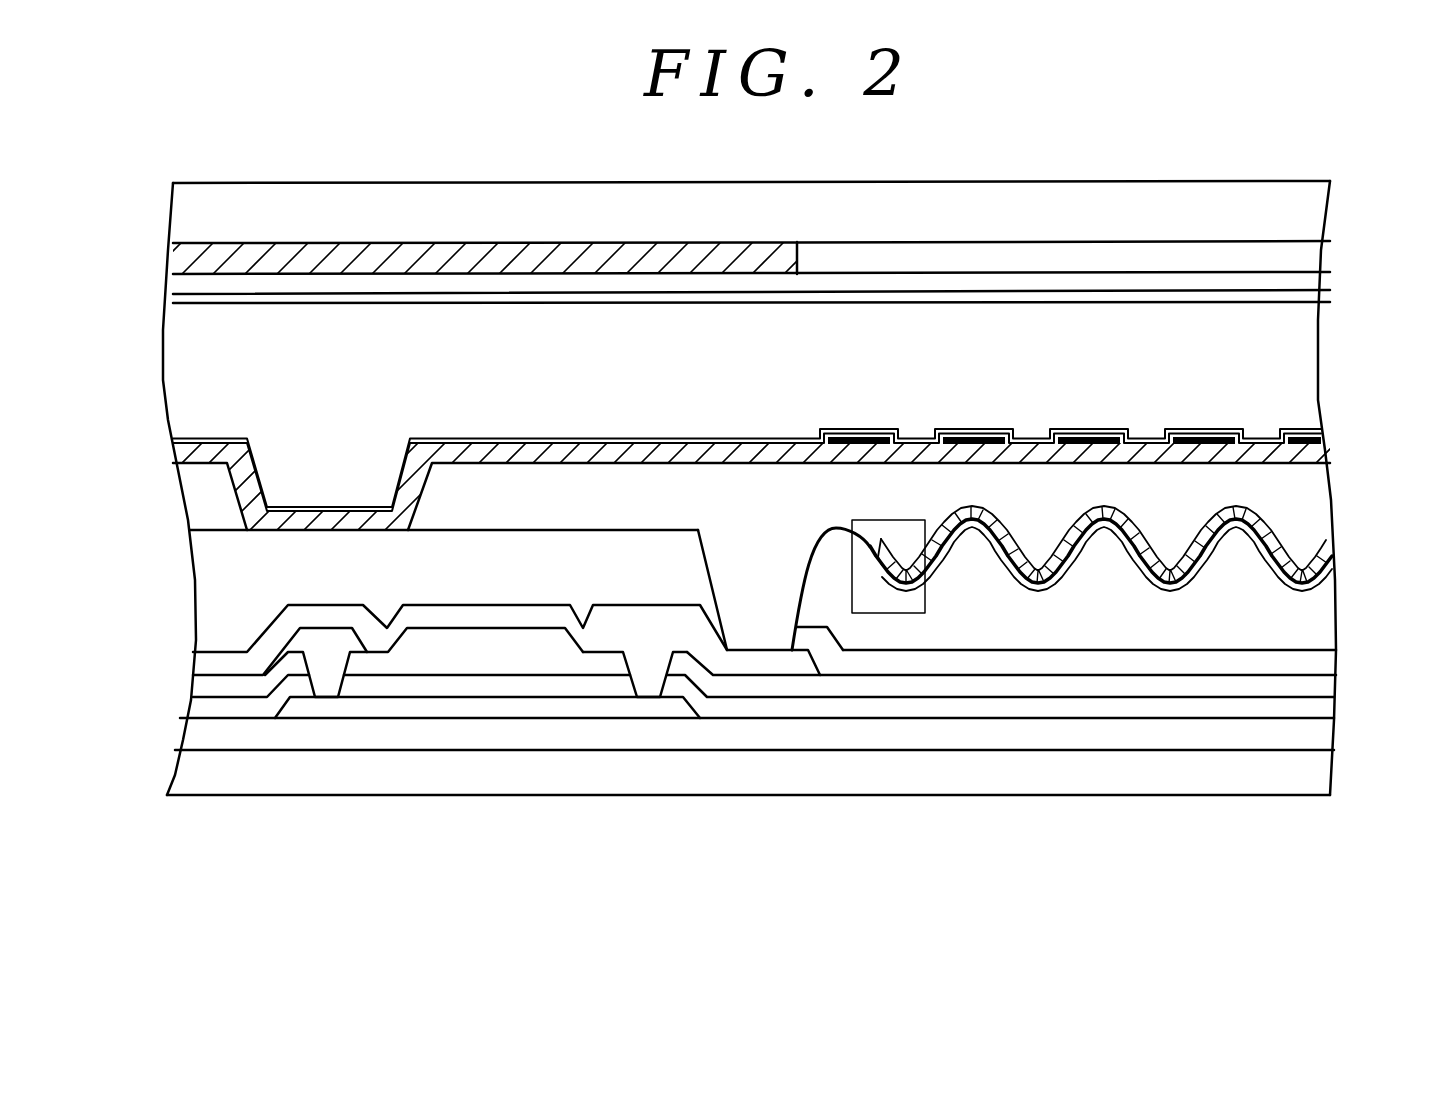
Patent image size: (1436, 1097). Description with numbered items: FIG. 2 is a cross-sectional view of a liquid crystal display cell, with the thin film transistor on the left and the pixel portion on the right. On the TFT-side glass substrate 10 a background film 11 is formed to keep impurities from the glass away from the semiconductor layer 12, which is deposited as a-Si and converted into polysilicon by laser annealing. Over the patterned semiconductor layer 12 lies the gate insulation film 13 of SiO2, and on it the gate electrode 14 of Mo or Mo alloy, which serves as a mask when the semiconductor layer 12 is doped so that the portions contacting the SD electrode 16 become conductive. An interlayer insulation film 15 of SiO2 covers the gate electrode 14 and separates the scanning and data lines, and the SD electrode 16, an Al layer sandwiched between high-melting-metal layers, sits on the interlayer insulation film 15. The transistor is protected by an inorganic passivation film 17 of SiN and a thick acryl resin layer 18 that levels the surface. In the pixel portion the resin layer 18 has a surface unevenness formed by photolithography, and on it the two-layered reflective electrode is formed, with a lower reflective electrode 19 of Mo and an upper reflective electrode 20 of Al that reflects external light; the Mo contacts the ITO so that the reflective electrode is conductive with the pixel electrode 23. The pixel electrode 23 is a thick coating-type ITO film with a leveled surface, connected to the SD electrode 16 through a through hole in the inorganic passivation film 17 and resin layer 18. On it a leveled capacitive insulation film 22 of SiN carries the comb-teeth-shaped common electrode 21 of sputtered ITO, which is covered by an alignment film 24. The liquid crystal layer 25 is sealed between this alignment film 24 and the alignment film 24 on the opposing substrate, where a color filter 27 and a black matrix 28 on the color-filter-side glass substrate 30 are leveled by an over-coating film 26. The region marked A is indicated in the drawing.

The TFT-side glass substrate 10 is at (195, 778).
The background film 11 is at (205, 738).
The semiconductor layer 12 is at (408, 713).
The gate insulation film 13 is at (205, 708).
The gate electrode 14 is at (510, 667).
The interlayer insulation film 15 is at (205, 680).
The SD electrode 16 is at (750, 663).
The inorganic passivation film 17 is at (205, 648).
The resin layer 18 is at (210, 592).
The lower reflective electrode 19 is at (1336, 566).
The upper reflective electrode 20 is at (1334, 535).
The comb-teeth-shaped common electrode 21 is at (968, 437).
The capacitive insulation film 22 is at (183, 461).
The pixel electrode 23 is at (205, 503).
The alignment film 24 is at (193, 310).
The liquid crystal layer 25 is at (197, 383).
The over-coating film 26 is at (180, 284).
The color filter 27 is at (1308, 257).
The black matrix 28 is at (192, 258).
The color-filter-side glass substrate 30 is at (195, 214).
The enlarged region A is at (890, 613).